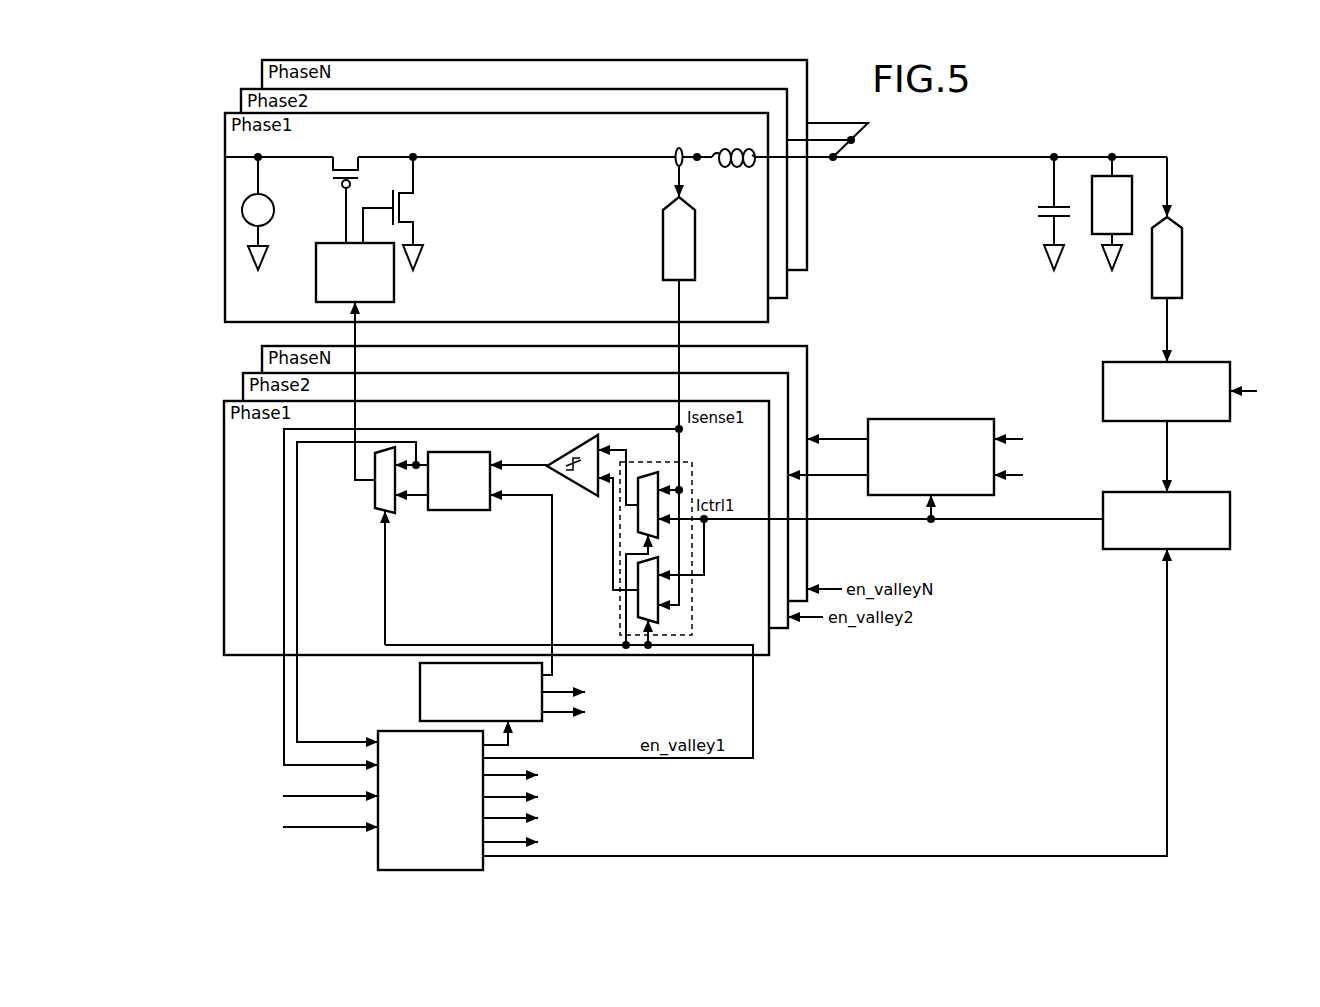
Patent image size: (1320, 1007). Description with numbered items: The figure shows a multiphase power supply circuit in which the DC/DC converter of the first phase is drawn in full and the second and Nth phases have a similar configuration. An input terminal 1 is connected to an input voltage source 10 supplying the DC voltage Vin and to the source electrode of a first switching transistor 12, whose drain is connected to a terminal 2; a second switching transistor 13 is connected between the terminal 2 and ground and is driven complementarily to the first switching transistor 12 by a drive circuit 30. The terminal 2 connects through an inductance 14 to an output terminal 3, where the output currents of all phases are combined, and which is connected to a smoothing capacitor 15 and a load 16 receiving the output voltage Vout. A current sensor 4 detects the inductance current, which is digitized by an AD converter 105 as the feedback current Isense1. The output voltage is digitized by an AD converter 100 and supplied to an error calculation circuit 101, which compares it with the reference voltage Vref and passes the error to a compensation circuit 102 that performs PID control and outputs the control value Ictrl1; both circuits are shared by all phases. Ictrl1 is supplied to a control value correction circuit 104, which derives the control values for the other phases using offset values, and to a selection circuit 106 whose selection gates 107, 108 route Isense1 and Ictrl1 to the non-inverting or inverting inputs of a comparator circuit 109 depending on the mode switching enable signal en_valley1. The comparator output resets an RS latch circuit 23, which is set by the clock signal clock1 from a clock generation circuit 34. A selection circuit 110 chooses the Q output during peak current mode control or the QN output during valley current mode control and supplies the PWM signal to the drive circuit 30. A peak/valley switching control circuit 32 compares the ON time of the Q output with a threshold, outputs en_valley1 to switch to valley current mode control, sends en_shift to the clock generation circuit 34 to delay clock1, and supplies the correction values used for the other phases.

The input terminal 1 is at (256, 157).
The terminal 2 is at (698, 162).
The output terminal 3 is at (1112, 155).
The current sensor 4 is at (672, 165).
The input voltage source 10 is at (274, 212).
The first switching transistor 12 is at (346, 153).
The second switching transistor 13 is at (415, 211).
The inductance 14 is at (724, 151).
The smoothing capacitor 15 is at (1038, 207).
The load 16 is at (1099, 238).
The RS latch circuit 23 is at (445, 514).
The drive circuit 30 is at (316, 270).
The peak/valley switching control circuit 32 is at (391, 730).
The clock generation circuit 34 is at (420, 681).
The AD converter 100 is at (1182, 265).
The error calculation circuit 101 is at (1184, 361).
The compensation circuit 102 is at (1184, 491).
The control value correction circuit 104 is at (937, 419).
The AD converter 105 is at (663, 240).
The selection circuit 106 is at (693, 469).
The selection gate 107 is at (637, 520).
The selection gate 108 is at (637, 600).
The comparator circuit 109 is at (580, 495).
The selection circuit 110 is at (398, 513).